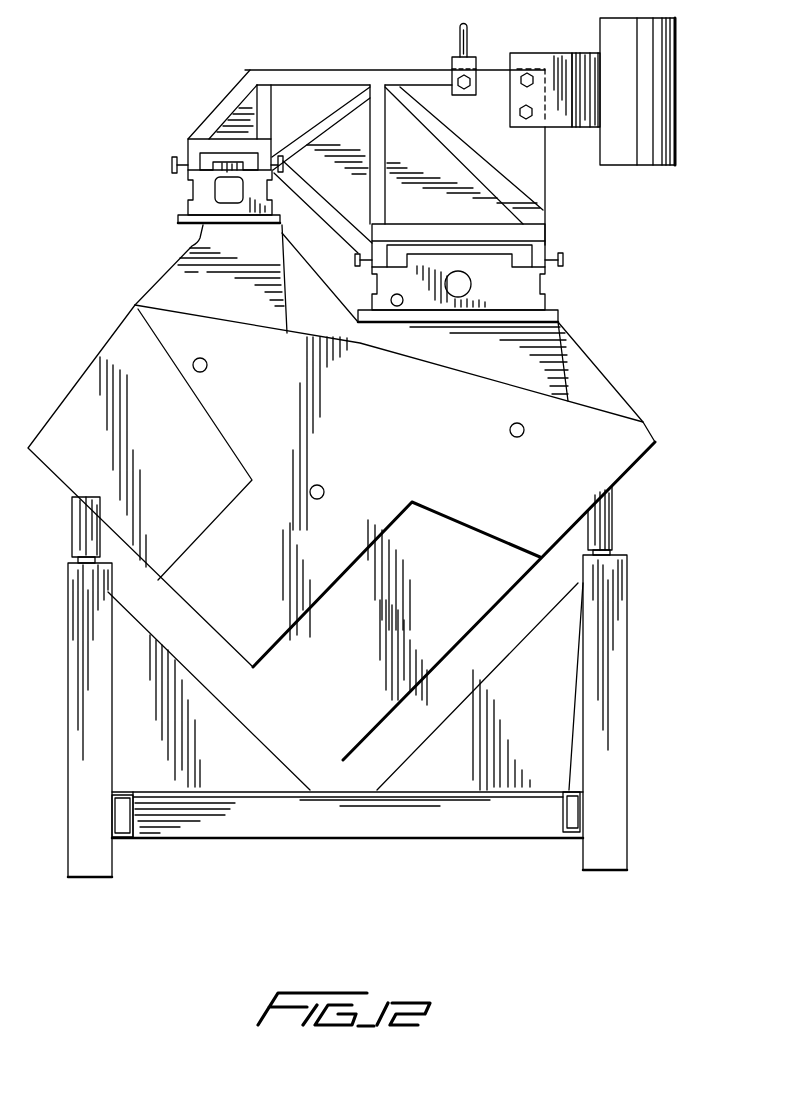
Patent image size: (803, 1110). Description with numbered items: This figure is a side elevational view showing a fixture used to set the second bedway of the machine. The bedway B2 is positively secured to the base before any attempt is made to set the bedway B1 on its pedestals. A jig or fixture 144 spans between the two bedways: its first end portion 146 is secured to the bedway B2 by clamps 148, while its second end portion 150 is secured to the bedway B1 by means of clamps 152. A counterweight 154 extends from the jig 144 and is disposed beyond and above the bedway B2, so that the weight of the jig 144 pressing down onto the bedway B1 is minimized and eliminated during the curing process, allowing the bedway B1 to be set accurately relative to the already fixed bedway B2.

The jig or fixture 144 is at (378, 52).
The first end portion 146 is at (412, 240).
The clamps 148 is at (565, 258).
The second end portion 150 is at (217, 147).
The clamps 152 is at (172, 165).
The counterweight 154 is at (624, 145).
The bedway B1 is at (200, 195).
The bedway B2 is at (545, 288).